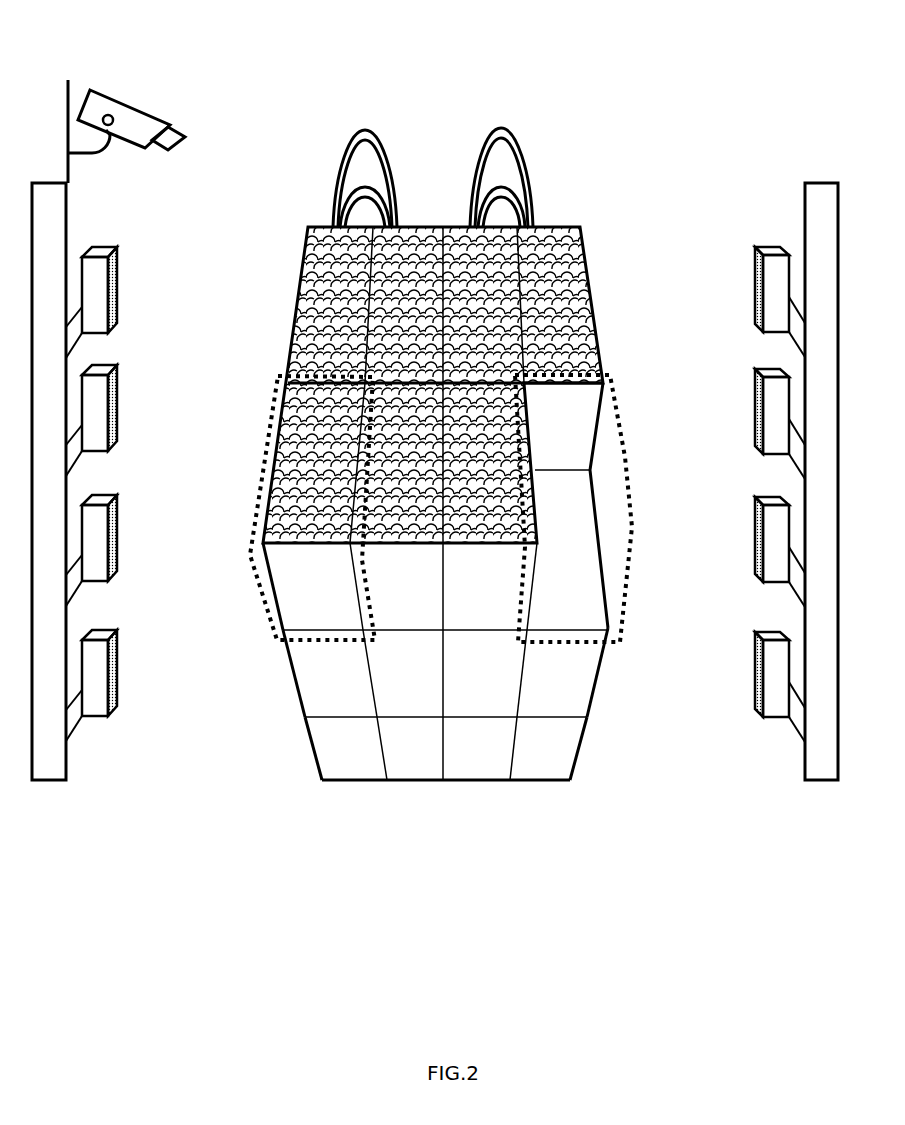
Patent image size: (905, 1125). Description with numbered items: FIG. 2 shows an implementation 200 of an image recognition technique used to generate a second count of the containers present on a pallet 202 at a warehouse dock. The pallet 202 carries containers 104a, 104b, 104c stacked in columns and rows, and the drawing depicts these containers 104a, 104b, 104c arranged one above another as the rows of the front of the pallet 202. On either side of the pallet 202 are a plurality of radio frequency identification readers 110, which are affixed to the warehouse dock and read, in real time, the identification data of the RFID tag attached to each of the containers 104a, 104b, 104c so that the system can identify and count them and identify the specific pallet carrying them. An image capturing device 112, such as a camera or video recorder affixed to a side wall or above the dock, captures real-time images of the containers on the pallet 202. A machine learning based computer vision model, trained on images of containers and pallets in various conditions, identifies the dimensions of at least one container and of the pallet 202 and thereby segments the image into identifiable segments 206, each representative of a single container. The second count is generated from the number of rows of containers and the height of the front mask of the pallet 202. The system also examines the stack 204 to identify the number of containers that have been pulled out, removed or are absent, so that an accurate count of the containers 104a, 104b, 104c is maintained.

The container 104a is at (300, 600).
The container 104b is at (315, 682).
The container 104c is at (343, 758).
The radio frequency identification (RFID) readers 110 is at (110, 292).
The image capturing device 112 is at (115, 93).
The implementation of image recognition technique 200 is at (439, 435).
The pallet 202 is at (573, 226).
The stack 204 is at (622, 455).
The identifiable segment 206 is at (263, 455).